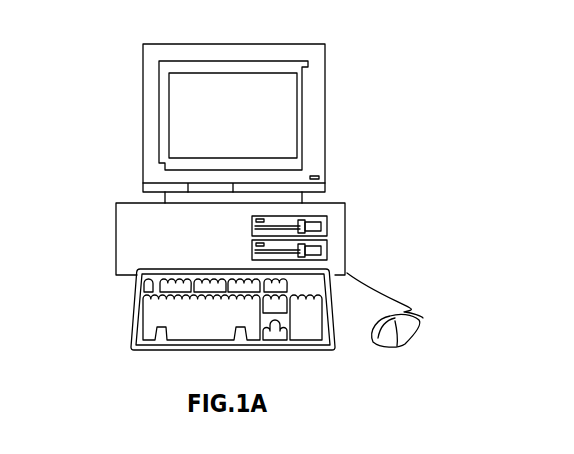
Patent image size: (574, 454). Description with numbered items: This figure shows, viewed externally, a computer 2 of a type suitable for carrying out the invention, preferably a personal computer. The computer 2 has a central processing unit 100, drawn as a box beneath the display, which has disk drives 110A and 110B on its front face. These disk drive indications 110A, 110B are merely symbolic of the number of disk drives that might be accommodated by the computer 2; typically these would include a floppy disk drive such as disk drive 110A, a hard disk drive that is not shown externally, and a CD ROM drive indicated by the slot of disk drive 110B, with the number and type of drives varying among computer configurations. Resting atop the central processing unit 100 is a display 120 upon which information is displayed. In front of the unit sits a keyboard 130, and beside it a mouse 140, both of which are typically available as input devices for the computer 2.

The computer 2 is at (398, 83).
The central processing unit 100 is at (240, 229).
The disk drive 110A is at (327, 228).
The disk drive 110B is at (327, 247).
The display 120 is at (325, 90).
The keyboard 130 is at (133, 305).
The mouse 140 is at (418, 324).